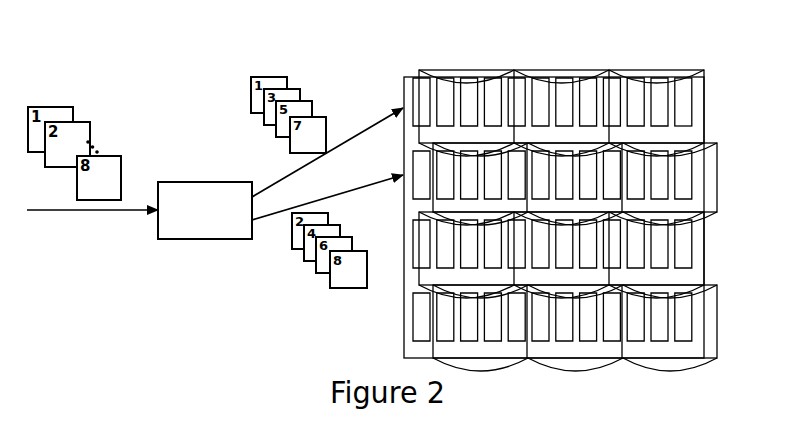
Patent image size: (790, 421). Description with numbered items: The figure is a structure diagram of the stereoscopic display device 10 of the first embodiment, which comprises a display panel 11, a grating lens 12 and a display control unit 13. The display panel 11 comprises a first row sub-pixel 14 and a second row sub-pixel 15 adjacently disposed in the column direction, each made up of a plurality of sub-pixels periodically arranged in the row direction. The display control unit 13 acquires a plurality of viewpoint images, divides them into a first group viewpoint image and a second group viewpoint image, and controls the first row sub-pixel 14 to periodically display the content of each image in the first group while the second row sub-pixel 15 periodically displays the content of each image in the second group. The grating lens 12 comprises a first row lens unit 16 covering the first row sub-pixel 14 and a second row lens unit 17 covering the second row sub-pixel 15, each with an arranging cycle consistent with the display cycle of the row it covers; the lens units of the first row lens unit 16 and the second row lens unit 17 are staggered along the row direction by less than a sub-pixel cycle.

The stereoscopic display device 10 is at (402, 38).
The display panel 11 is at (693, 90).
The grating lens 12 is at (704, 67).
The display control unit 13 is at (215, 182).
The first row sub-pixel 14 is at (682, 115).
The second row sub-pixel 15 is at (682, 182).
The first row lens unit 16 is at (702, 135).
The second row lens unit 17 is at (703, 203).